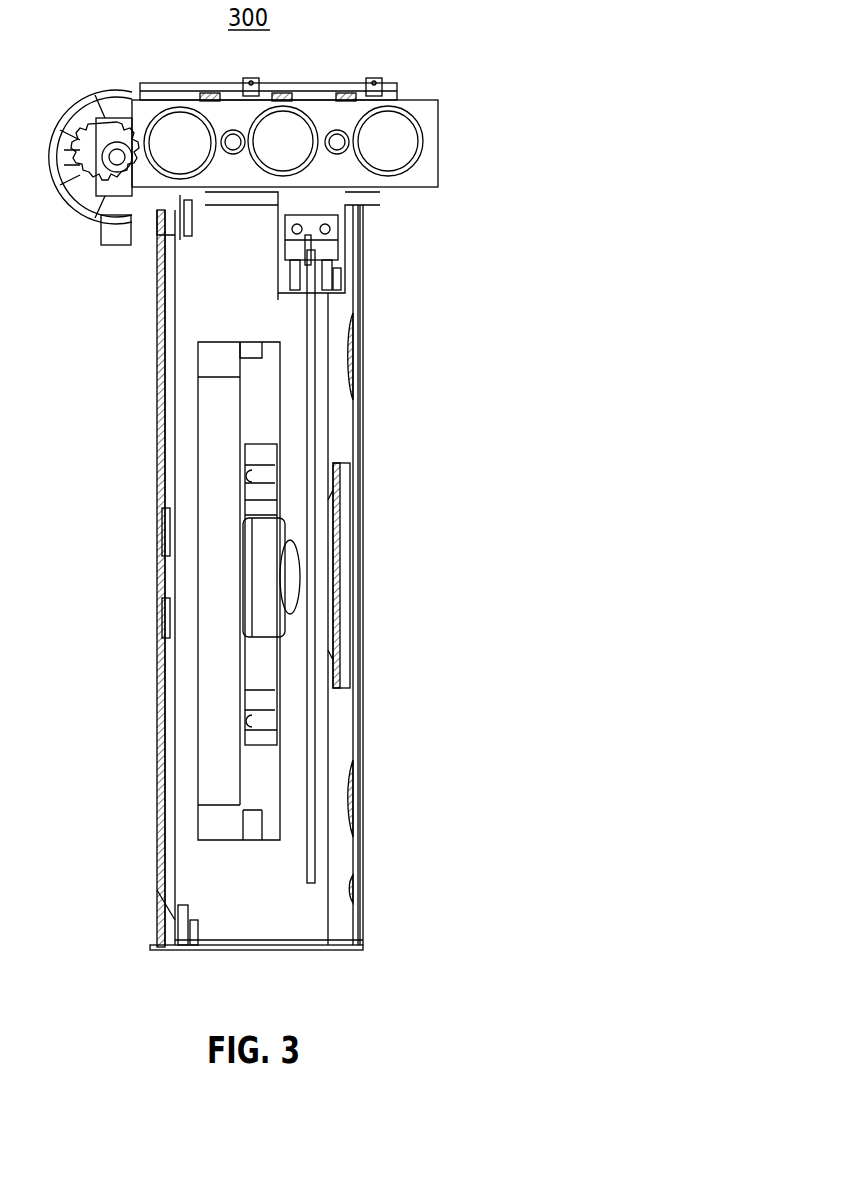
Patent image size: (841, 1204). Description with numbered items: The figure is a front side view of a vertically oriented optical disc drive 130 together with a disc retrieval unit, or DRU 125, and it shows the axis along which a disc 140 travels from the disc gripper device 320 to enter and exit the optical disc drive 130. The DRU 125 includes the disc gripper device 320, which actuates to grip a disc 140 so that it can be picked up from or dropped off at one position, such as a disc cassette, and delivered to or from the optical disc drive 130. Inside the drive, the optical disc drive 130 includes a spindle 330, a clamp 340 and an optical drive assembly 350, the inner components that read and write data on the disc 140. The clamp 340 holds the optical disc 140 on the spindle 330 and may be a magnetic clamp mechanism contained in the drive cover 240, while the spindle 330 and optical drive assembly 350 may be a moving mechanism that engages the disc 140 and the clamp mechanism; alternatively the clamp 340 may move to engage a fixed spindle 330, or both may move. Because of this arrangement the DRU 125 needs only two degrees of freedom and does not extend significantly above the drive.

The disc retrieval unit (DRU) 125 is at (440, 132).
The optical disc drive 130 is at (167, 316).
The disc gripper device 320 is at (343, 292).
The disc 140 is at (315, 410).
The optical drive assembly 350 is at (218, 460).
The spindle 330 is at (295, 577).
The clamp 340 is at (325, 548).
The drive cover 240 is at (365, 708).